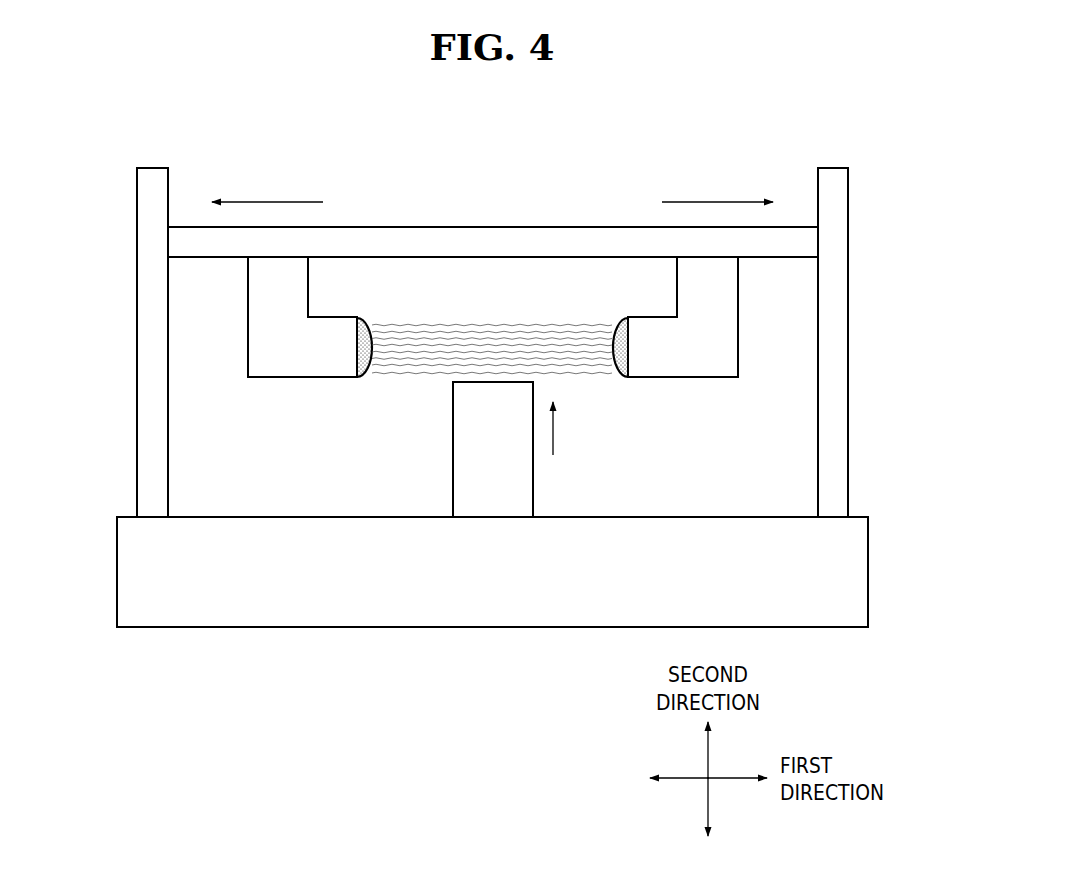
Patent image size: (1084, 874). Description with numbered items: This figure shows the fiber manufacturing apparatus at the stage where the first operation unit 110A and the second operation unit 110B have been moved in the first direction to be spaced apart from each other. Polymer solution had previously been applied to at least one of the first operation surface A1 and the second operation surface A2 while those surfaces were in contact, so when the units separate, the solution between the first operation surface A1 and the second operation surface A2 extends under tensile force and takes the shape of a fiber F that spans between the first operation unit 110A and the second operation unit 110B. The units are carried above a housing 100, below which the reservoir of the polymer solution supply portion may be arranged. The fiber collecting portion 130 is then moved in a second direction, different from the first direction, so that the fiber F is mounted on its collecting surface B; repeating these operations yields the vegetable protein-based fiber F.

The housing 100 is at (290, 607).
The fiber collecting portion 130 is at (485, 500).
The first operation unit 110A is at (339, 260).
The second operation unit 110B is at (641, 260).
The first operation surface A1 is at (358, 317).
The second operation surface A2 is at (627, 317).
The fiber F is at (501, 335).
The collecting surface B is at (455, 381).